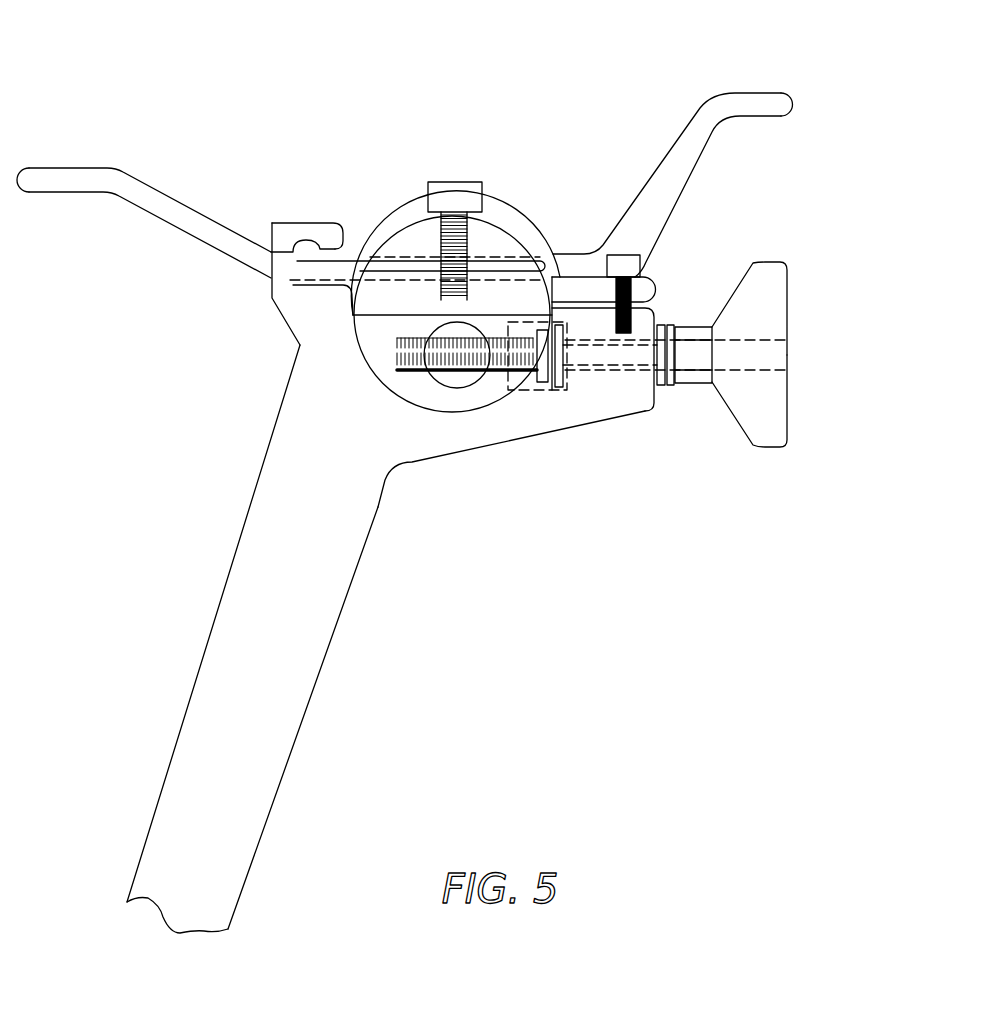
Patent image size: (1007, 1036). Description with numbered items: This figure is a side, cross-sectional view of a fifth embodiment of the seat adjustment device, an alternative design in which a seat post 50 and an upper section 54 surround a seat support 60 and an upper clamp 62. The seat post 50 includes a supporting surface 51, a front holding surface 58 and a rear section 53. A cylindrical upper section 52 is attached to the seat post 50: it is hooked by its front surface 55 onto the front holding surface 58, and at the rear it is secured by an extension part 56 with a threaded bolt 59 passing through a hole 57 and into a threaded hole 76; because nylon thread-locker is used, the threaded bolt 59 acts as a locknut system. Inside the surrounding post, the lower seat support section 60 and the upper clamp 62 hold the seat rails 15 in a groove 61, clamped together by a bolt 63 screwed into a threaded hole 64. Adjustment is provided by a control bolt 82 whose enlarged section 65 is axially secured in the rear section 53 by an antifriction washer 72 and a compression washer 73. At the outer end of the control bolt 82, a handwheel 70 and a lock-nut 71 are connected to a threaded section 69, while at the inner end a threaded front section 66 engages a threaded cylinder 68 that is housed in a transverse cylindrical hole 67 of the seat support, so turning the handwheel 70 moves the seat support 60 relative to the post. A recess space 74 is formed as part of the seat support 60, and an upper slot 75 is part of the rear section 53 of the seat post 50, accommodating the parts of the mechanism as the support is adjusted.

The rails 15 is at (205, 228).
The seat post 50 is at (276, 642).
The supporting surface 51 is at (382, 393).
The cylindrical upper section 52 is at (517, 212).
The rear section 53 is at (647, 405).
The upper section 54 is at (490, 197).
The front surface 55 is at (305, 253).
The extension part 56 is at (660, 283).
The hole 57 is at (640, 265).
The front holding surface 58 is at (325, 237).
The threaded bolt 59 is at (637, 242).
The lower seat support section 60 is at (380, 348).
The groove 61 is at (405, 285).
The upper clamp 62 is at (417, 233).
The bolt 63 is at (452, 180).
The threaded hole 64 is at (468, 290).
The enlarged section 65 is at (563, 385).
The threaded front section 66 is at (380, 347).
The transverse cylindrical hole 67 is at (468, 395).
The threaded cylinder 68 is at (408, 372).
The threaded section 69 is at (735, 358).
The handwheel 70 is at (765, 295).
The lock-nut 71 is at (697, 385).
The antifriction washer 72 is at (668, 392).
The compression washer 73 is at (570, 383).
The recess space 74 is at (517, 387).
The upper slot 75 is at (597, 373).
The threaded hole 76 is at (672, 325).
The control bolt 82 is at (583, 352).